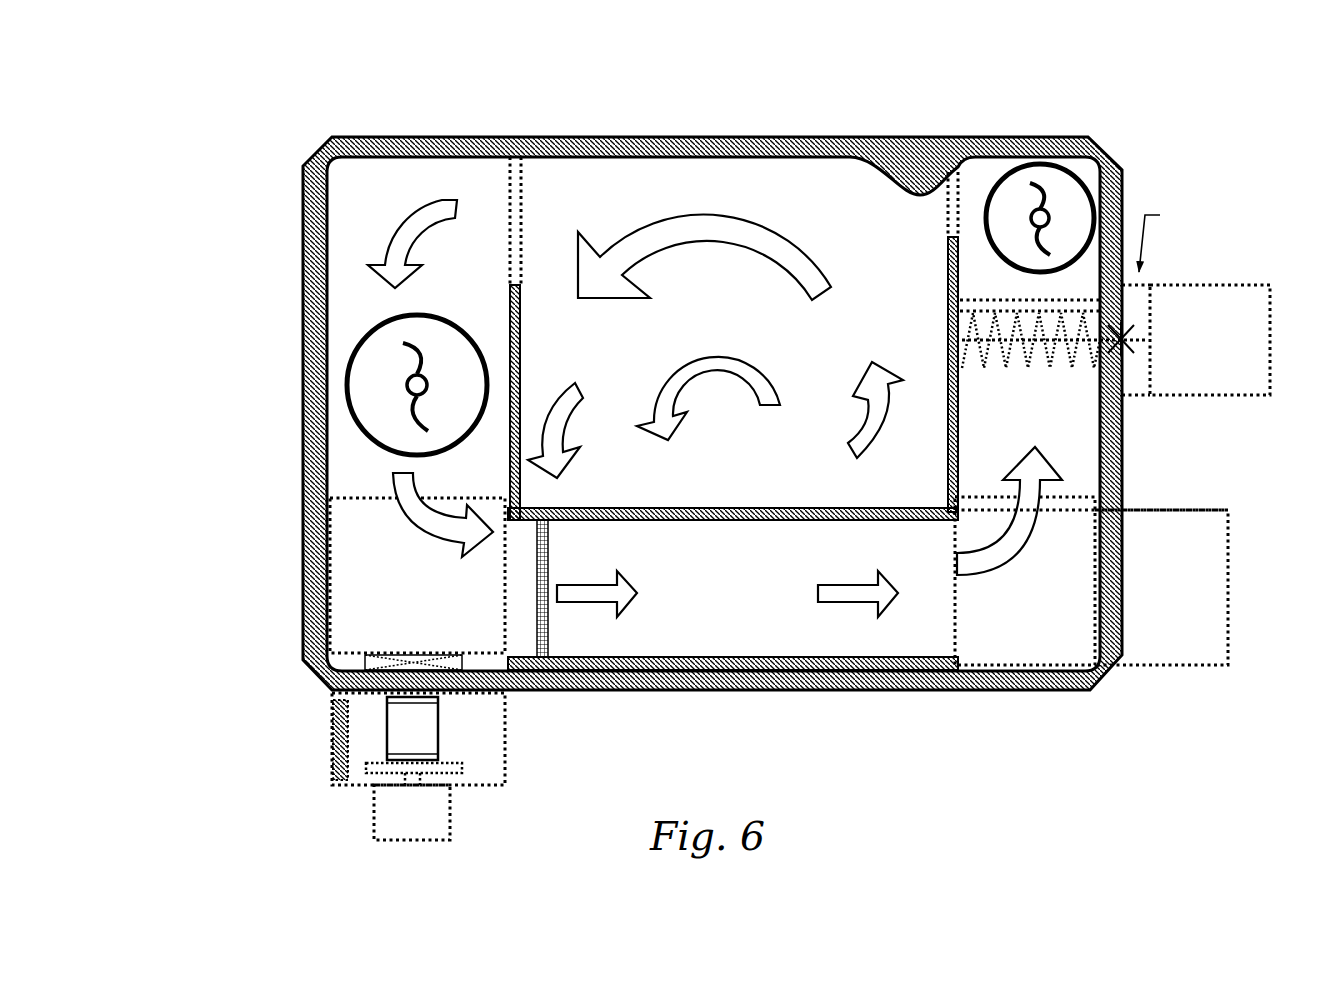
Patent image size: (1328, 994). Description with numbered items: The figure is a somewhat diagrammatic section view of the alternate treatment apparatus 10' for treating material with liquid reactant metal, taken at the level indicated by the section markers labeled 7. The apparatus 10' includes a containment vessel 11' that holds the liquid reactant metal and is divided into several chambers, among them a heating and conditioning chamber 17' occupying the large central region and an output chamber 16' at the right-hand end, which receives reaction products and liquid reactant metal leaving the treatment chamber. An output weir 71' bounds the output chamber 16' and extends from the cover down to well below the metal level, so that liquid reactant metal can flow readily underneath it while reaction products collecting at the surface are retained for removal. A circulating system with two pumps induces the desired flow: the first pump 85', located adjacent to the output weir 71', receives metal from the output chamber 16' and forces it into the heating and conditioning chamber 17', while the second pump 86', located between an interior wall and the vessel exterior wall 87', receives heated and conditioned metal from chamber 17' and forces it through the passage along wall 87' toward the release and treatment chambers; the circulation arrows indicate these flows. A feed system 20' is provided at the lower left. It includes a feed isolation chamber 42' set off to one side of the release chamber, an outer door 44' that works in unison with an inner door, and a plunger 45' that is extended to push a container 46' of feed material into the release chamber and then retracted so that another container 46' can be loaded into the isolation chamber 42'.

The alternate treatment apparatus 10' is at (732, 458).
The containment vessel 11' is at (712, 383).
The first pump 85' is at (1040, 183).
The second pump 86' is at (367, 385).
The vessel exterior wall 87' is at (350, 244).
The output weir 71' is at (1008, 316).
The heating and conditioning chamber 17' is at (715, 346).
The output chamber 16' is at (1025, 556).
The section line 7- 7 is at (283, 574).
The feed system 20' is at (447, 766).
The feed isolation chamber 42' is at (470, 766).
The outer door 44' is at (306, 740).
The plunger 45' is at (452, 801).
The container 46' is at (442, 728).